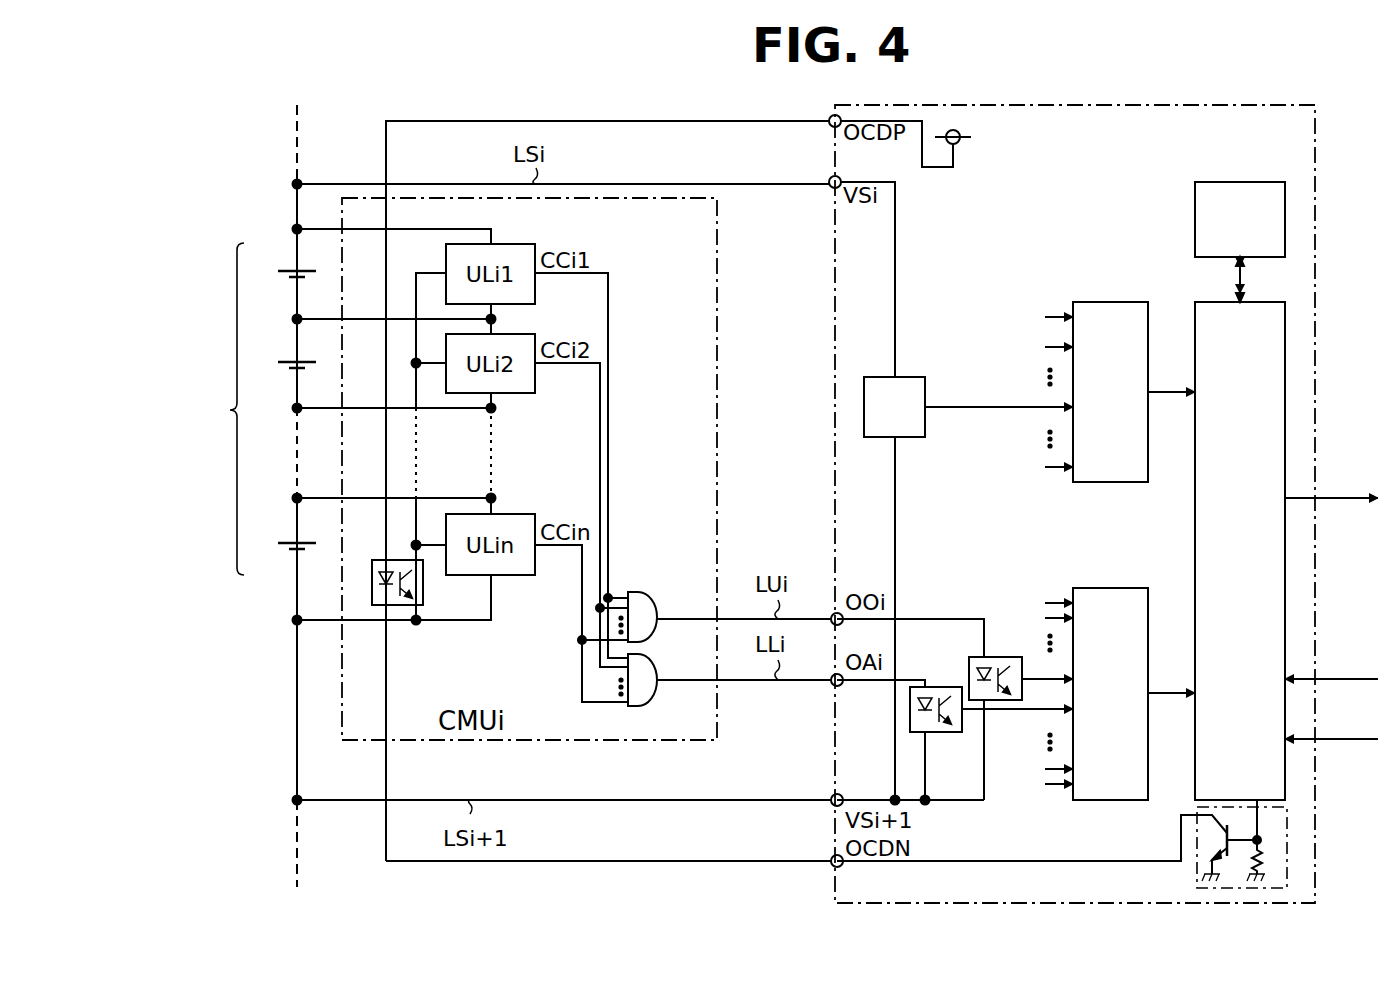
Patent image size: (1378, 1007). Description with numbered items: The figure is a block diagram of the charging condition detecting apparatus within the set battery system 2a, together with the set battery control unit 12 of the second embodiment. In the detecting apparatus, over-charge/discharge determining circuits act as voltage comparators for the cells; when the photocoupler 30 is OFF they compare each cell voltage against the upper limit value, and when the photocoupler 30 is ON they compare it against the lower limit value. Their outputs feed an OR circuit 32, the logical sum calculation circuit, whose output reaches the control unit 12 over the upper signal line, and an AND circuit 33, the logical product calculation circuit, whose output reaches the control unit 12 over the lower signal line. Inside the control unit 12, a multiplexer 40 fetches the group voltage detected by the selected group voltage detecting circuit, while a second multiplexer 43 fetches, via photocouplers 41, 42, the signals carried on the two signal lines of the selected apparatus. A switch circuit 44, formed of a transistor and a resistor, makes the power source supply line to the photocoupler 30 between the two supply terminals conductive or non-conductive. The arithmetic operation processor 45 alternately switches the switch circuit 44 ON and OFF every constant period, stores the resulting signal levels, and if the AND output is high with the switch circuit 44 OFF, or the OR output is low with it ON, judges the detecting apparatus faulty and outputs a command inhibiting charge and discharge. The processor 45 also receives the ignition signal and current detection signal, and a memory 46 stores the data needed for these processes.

The set battery system 2a is at (150, 186).
The BCU 12 is at (1315, 126).
The photocoupler 30 is at (378, 560).
The OR circuit 32 is at (657, 605).
The AND circuit 33 is at (657, 697).
The multiplexer (MPX) 40 is at (1112, 302).
The photocoupler 41 is at (950, 732).
The photocoupler 42 is at (969, 664).
The MPX 43 is at (1112, 588).
The switch circuit 44 is at (1197, 880).
The arithmetic operation processor (CPU) 45 is at (1253, 302).
The memory 46 is at (1253, 182).